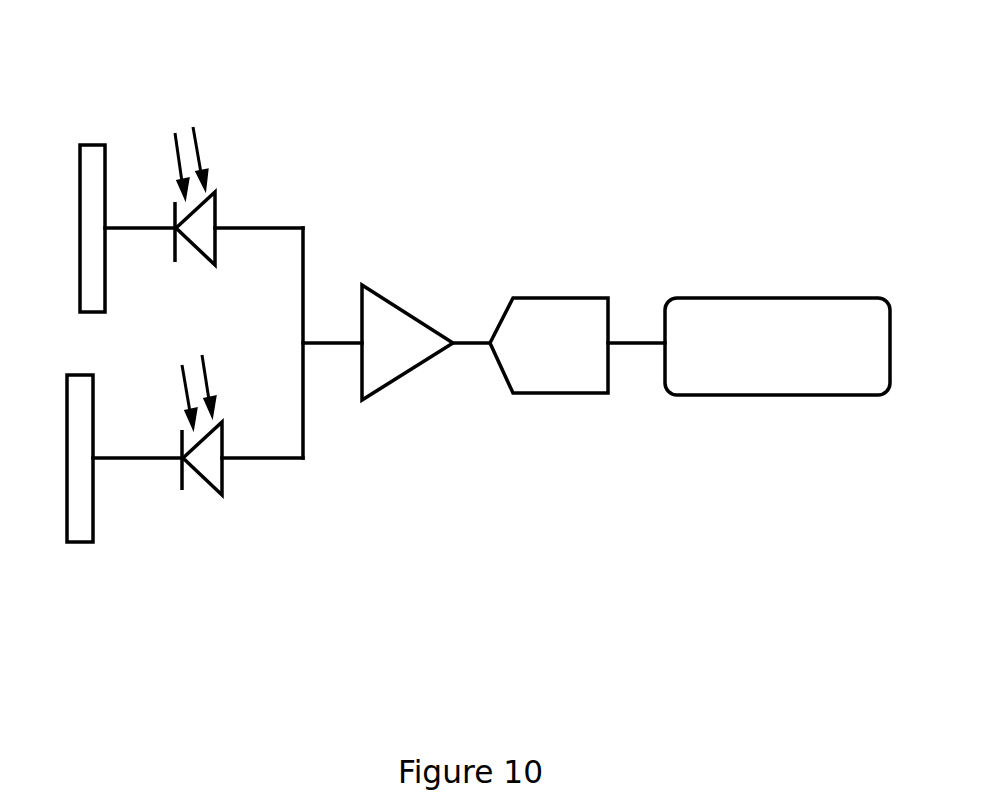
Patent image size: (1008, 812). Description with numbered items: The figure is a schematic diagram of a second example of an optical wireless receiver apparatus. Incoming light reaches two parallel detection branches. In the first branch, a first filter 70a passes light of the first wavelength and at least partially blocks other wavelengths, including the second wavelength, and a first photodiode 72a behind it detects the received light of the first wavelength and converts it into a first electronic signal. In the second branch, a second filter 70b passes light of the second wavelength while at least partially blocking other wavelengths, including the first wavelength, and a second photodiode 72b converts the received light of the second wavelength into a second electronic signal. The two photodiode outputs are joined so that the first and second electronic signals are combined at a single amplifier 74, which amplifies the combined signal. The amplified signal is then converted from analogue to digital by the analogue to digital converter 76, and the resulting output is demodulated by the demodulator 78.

The first filter 70a is at (92, 123).
The first photodiode 72a is at (188, 118).
The second filter 70b is at (85, 568).
The second photodiode 72b is at (197, 568).
The amplifier 74 is at (398, 430).
The analogue to digital converter 76 is at (565, 430).
The demodulator 78 is at (817, 430).